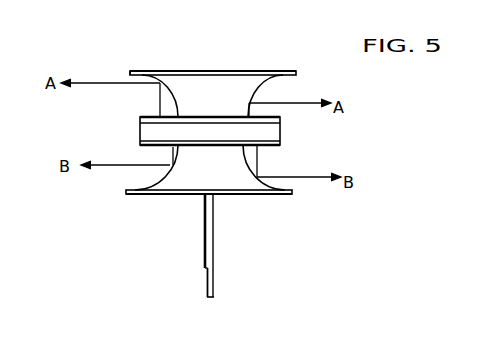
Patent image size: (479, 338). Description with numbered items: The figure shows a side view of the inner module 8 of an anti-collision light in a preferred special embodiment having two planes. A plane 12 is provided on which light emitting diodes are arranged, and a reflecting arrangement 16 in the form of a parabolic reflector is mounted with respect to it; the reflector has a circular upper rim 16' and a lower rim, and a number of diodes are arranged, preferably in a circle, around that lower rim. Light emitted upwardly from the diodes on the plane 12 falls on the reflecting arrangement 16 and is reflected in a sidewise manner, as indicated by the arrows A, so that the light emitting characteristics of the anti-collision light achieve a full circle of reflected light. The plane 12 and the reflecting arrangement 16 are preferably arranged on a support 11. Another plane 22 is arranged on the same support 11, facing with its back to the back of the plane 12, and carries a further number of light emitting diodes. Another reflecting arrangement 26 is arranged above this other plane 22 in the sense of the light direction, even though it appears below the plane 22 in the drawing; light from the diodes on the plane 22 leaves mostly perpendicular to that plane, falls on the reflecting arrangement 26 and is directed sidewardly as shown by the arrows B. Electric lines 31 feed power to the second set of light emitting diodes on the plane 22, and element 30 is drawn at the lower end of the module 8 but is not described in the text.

The module 8 is at (126, 209).
The support 11 is at (146, 130).
The plane 12 is at (146, 117).
The reflecting arrangement 16 is at (213, 60).
The circular upper rim 16' is at (142, 56).
The other plane 22 is at (263, 147).
The other reflecting arrangement 26 is at (235, 178).
The stem / shaft 30 is at (205, 243).
The electric lines 31 is at (213, 287).